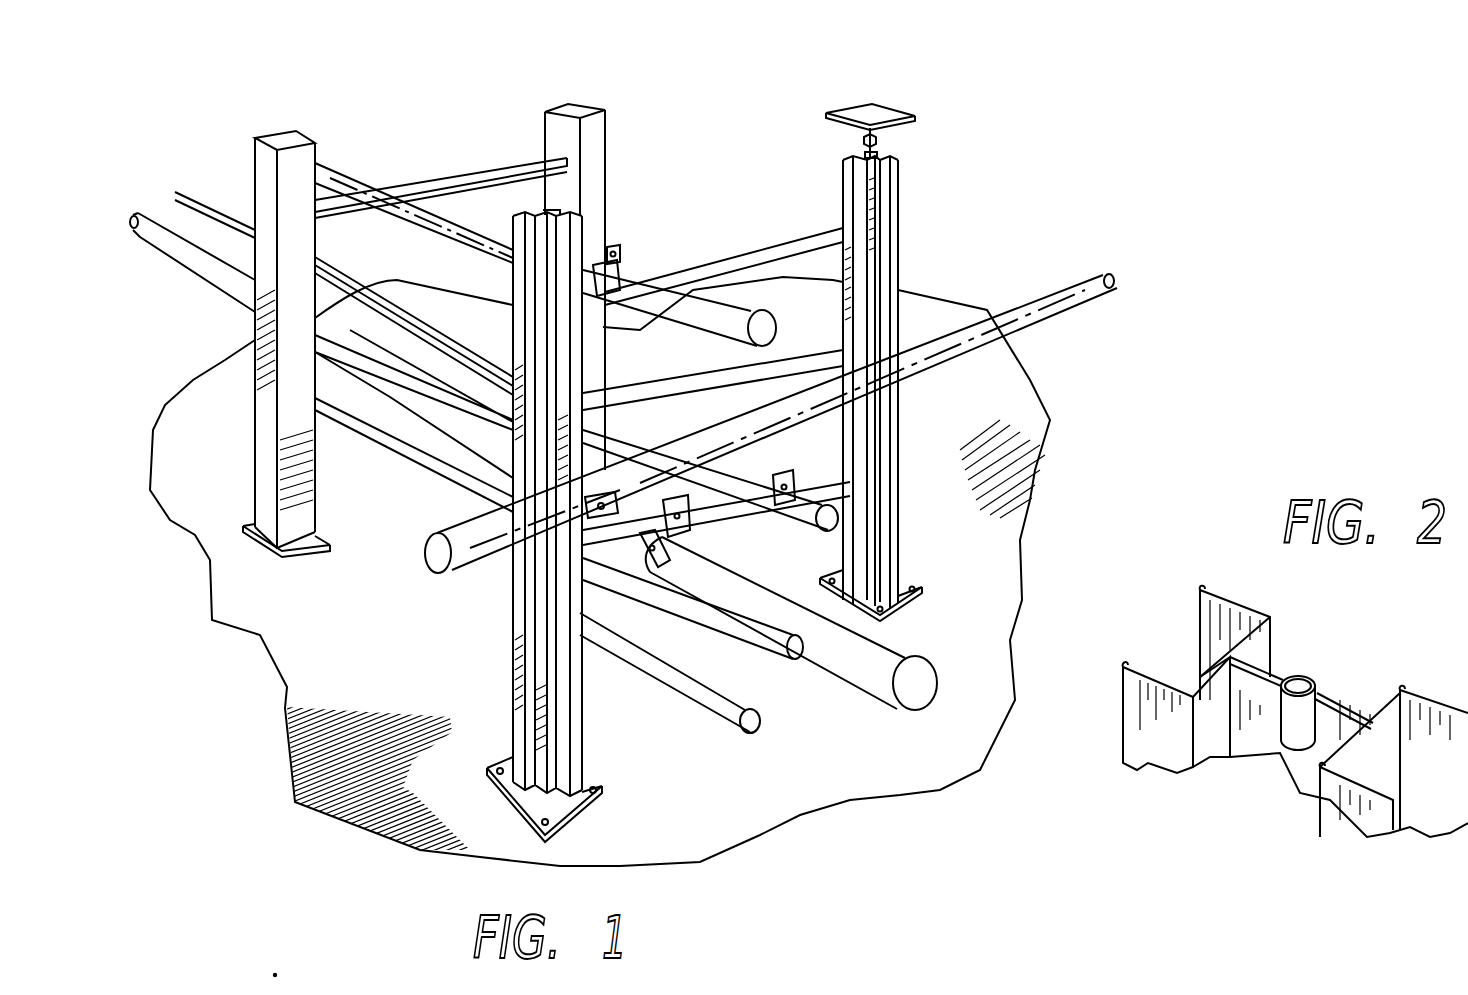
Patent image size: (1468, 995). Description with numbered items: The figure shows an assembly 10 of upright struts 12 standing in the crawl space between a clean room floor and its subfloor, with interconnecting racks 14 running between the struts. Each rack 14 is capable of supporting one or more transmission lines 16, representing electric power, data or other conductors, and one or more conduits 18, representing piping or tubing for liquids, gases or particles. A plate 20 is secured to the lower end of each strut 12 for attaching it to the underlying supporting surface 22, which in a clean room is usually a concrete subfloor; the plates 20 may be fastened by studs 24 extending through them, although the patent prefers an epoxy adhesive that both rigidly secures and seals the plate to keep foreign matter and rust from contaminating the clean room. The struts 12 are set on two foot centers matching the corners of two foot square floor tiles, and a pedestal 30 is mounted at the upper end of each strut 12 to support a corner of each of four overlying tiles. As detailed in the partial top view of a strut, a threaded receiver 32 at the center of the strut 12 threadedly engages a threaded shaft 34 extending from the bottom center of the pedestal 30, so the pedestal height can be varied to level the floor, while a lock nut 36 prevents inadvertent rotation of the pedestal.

In FIG. 1, the assembly 10 is at (408, 633).
In FIG. 1, the strut 12 is at (260, 440).
In FIG. 2, the strut 12 is at (1130, 723).
In FIG. 1, the rack 14 is at (480, 165).
In FIG. 1, the transmission line 16 is at (742, 468).
In FIG. 1, the conduit 18 is at (890, 655).
In FIG. 1, the plate 20 is at (592, 783).
In FIG. 1, the supporting surface 22 is at (708, 836).
In FIG. 1, the stud 24 is at (492, 756).
In FIG. 1, the pedestal 30 is at (885, 107).
In FIG. 2, the threaded receiver 32 is at (1305, 677).
In FIG. 1, the threaded shaft 34 is at (877, 133).
In FIG. 1, the lock nut 36 is at (862, 141).